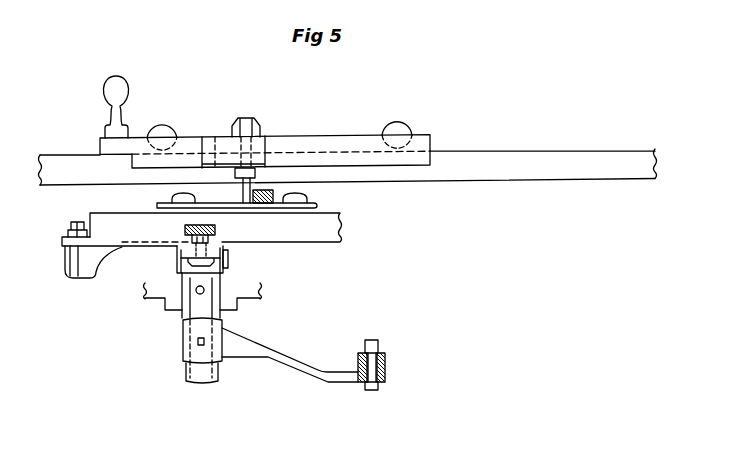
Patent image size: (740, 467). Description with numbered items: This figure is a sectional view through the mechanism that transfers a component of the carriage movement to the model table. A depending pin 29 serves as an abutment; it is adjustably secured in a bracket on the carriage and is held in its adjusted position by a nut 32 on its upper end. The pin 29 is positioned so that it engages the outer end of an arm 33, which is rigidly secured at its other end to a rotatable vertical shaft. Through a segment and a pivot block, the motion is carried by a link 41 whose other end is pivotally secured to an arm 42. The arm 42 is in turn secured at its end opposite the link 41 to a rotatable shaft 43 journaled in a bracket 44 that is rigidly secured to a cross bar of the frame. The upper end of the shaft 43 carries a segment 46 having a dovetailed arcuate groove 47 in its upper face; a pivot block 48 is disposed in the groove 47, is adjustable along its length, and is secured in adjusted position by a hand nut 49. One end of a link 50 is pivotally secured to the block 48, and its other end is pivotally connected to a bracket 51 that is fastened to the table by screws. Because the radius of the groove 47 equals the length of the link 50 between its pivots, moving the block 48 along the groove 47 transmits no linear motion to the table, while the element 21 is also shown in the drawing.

The plate 21 is at (314, 205).
The depending pin 29 is at (268, 188).
The nut 32 is at (259, 124).
The arm 33 is at (266, 192).
The link 41 is at (385, 360).
The arm 42 is at (331, 384).
The rotatable shaft 43 is at (214, 290).
The bracket 44 is at (221, 313).
The segment 46 is at (178, 270).
The dovetailed arcuate groove 47 is at (228, 262).
The pivot block 48 is at (177, 253).
The hand nut 49 is at (200, 225).
The link 50 is at (107, 237).
The bracket 51 is at (65, 256).